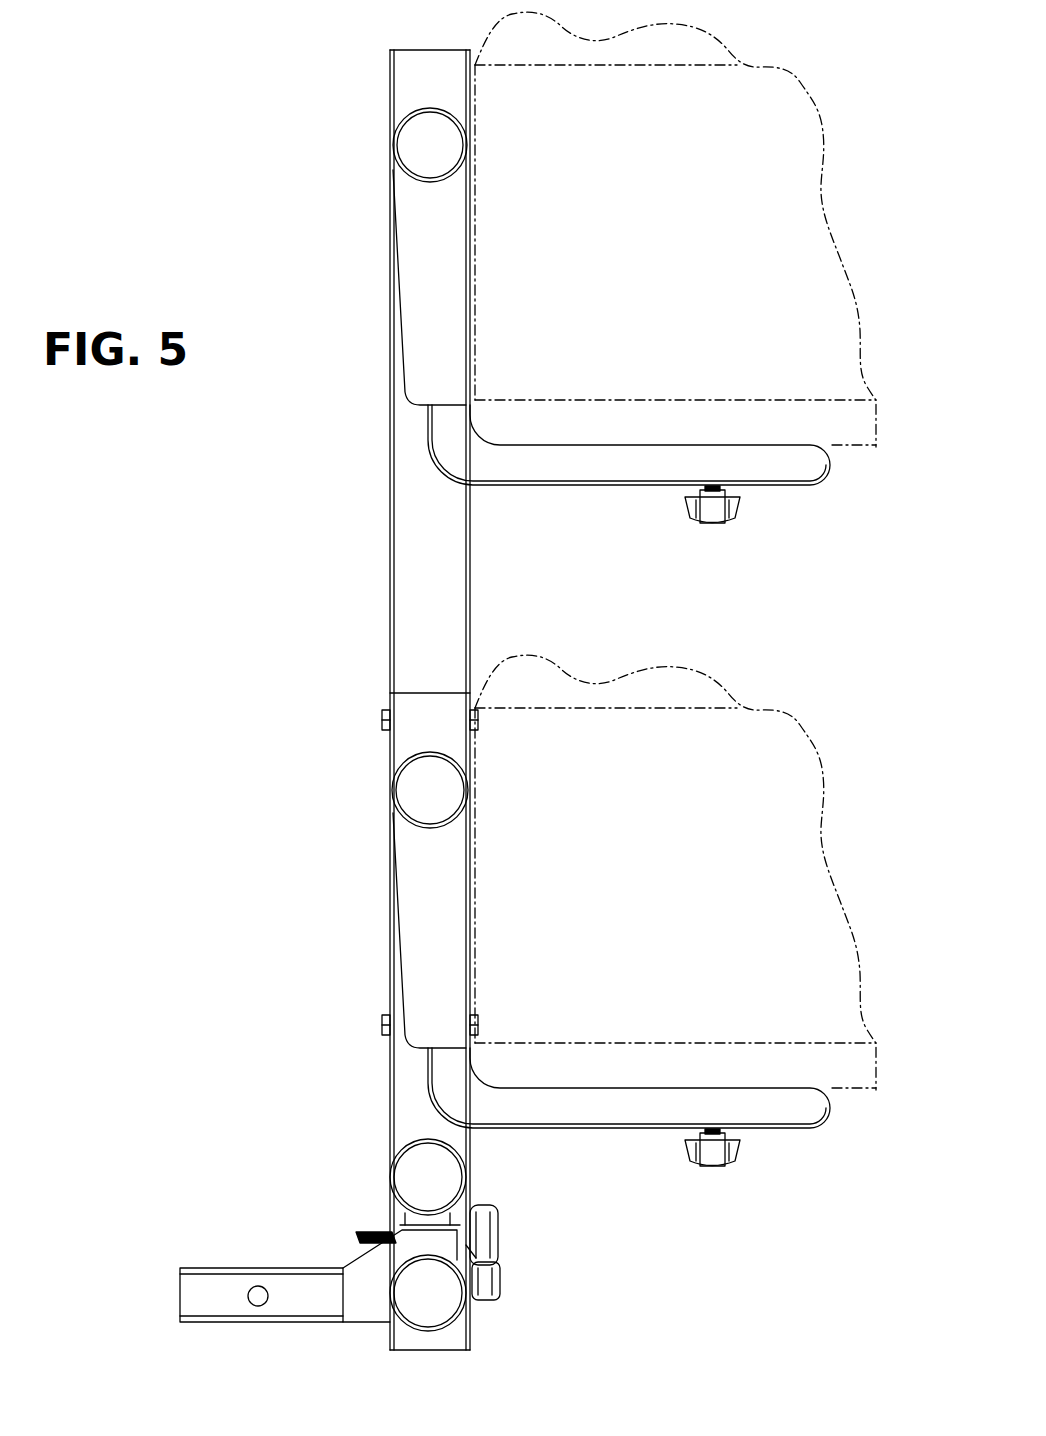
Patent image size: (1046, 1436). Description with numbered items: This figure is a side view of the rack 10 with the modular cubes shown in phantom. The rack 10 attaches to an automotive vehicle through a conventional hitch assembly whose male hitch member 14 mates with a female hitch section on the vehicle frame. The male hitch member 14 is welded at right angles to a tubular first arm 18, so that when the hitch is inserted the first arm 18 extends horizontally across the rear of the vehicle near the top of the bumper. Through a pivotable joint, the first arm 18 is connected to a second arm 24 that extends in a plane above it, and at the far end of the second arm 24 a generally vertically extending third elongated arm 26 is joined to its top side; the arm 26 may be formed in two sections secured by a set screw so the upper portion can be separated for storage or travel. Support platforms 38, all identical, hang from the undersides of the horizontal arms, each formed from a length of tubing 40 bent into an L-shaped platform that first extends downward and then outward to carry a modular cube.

The rack 10 is at (380, 481).
The male hitch member 14 is at (270, 1268).
The first arm 18 is at (393, 1340).
The second arm 24 is at (392, 1177).
The third elongated arm 26 is at (457, 530).
The support platform 38 is at (622, 490).
The tubing 40 is at (557, 476).